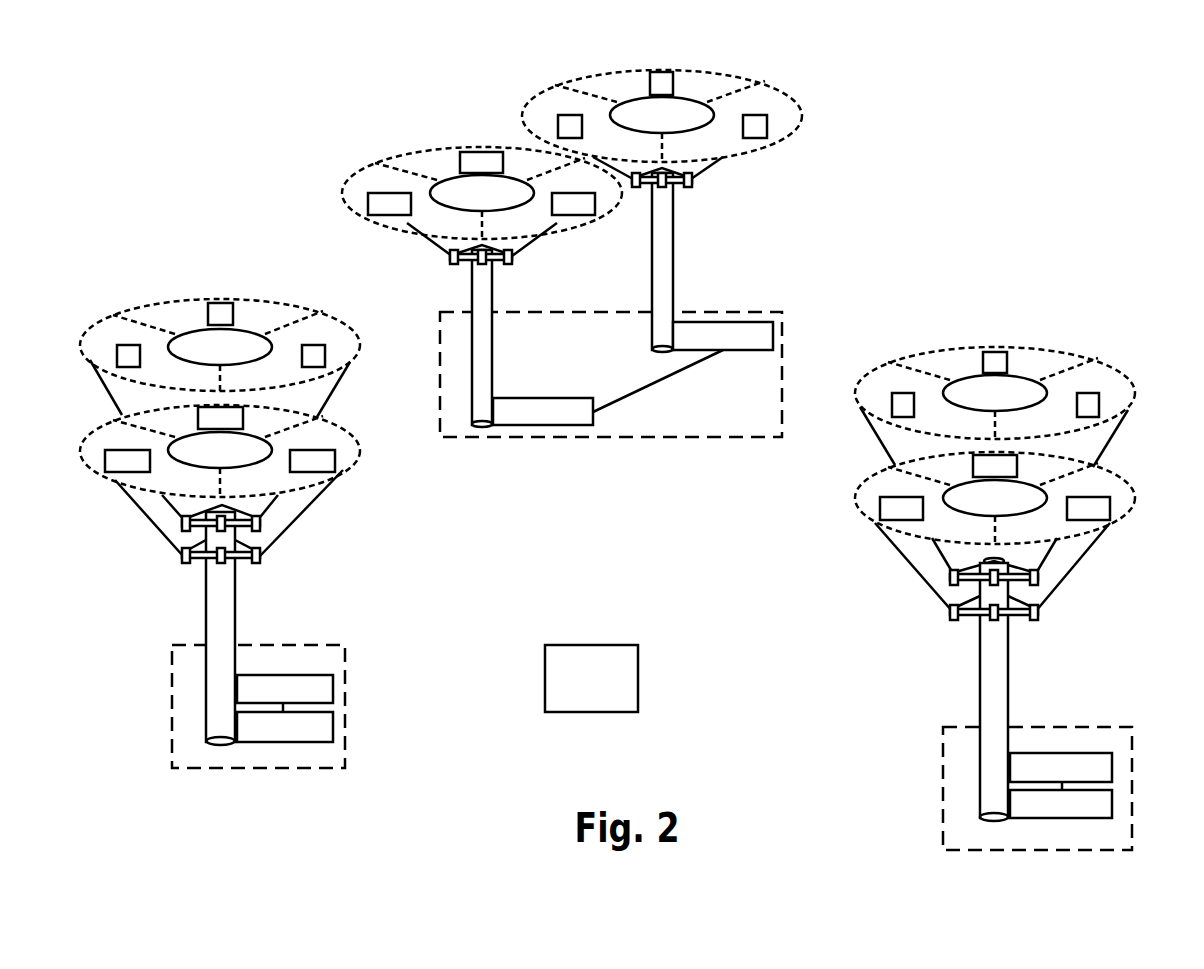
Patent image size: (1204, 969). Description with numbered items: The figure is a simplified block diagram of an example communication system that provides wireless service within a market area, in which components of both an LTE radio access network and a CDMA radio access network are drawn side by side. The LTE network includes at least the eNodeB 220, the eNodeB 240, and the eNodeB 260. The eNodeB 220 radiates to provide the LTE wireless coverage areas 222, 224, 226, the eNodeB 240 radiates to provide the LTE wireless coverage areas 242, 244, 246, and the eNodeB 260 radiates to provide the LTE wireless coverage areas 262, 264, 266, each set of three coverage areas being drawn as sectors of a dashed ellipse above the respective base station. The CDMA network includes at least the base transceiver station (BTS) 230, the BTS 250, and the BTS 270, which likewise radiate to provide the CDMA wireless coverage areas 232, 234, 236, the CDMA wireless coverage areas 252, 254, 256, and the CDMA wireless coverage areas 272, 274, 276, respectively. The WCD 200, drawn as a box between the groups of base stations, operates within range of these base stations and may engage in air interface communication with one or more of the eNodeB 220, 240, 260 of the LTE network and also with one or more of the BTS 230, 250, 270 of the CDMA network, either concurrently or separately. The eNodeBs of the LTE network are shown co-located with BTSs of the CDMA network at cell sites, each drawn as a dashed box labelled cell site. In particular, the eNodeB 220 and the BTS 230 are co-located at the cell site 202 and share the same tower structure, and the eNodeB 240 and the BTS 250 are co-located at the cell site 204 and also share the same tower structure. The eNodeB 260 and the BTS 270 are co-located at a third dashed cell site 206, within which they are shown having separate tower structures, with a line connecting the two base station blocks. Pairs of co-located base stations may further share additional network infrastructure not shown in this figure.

The WCD 200 is at (590, 712).
The cell site 202 is at (172, 708).
The cell site 204 is at (943, 787).
The cell site 206 is at (440, 328).
The eNodeB 220 is at (333, 689).
The LTE wireless coverage area 222 is at (322, 315).
The LTE wireless coverage area 224 is at (167, 301).
The LTE wireless coverage area 226 is at (95, 327).
The base transceiver station (BTS) 230 is at (333, 727).
The CDMA wireless coverage area 232 is at (338, 474).
The CDMA wireless coverage area 234 is at (270, 408).
The CDMA wireless coverage area 236 is at (86, 440).
The eNodeB 240 is at (1112, 766).
The LTE wireless coverage area 242 is at (1133, 391).
The LTE wireless coverage area 244 is at (958, 350).
The LTE wireless coverage area 246 is at (856, 405).
The base transceiver station (BTS) 250 is at (1112, 804).
The CDMA wireless coverage area 252 is at (1134, 501).
The CDMA wireless coverage area 254 is at (1040, 453).
The CDMA wireless coverage area 256 is at (857, 504).
The eNodeB 260 is at (773, 333).
The LTE wireless coverage area 262 is at (549, 91).
The LTE wireless coverage area 264 is at (731, 75).
The LTE wireless coverage area 266 is at (798, 105).
The base transceiver station (BTS) 270 is at (543, 427).
The CDMA wireless coverage area 272 is at (357, 212).
The CDMA wireless coverage area 274 is at (407, 157).
The CDMA wireless coverage area 276 is at (572, 226).